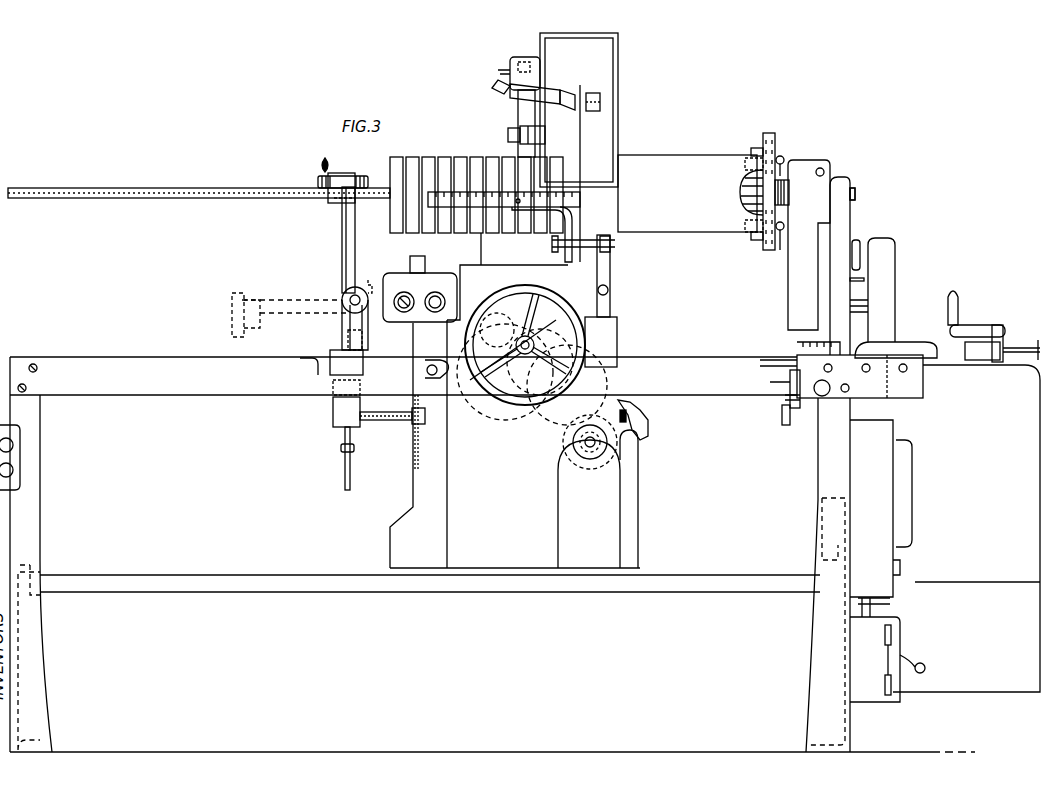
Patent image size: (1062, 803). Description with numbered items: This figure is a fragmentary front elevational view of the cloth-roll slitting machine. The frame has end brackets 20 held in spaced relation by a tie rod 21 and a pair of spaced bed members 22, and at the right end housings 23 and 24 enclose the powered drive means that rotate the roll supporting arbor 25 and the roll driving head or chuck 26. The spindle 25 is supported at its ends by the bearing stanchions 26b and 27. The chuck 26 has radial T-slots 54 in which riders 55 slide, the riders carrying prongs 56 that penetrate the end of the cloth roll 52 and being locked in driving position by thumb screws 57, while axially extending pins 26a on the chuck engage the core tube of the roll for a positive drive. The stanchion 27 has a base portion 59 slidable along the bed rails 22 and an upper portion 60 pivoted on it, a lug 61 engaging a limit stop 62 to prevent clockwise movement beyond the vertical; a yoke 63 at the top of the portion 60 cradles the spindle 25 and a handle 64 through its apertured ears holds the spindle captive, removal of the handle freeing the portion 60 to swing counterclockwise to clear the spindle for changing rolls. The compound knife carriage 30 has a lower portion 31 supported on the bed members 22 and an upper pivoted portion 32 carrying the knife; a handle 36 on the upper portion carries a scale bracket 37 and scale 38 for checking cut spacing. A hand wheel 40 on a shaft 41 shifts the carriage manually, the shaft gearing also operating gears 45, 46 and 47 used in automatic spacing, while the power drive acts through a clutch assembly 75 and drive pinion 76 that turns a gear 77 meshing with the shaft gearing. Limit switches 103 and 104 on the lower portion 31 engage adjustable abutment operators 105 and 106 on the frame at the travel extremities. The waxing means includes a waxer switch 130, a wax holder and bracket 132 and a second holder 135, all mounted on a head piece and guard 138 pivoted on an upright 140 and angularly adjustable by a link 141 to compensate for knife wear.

The end brackets 20 is at (38, 670).
The tie rod 21 is at (236, 584).
The slide or bed members 22 is at (188, 382).
The housing 23 is at (1013, 372).
The housing 24 is at (800, 167).
The roll supporting shaft or arbor 25 is at (208, 186).
The roll driving head or chuck 26 is at (769, 133).
The axially extending pins 26a is at (755, 190).
The bearing bracket or stanchion 26b is at (840, 177).
The bearing bracket or stanchion 27 is at (338, 243).
The compound knife carriage 30 is at (620, 324).
The lower carriage portion 31 is at (413, 462).
The upper carriage portion 32 is at (481, 248).
The handle 36 is at (608, 289).
The scale bracket 37 is at (572, 213).
The scale 38 is at (495, 208).
The hand wheel 40 is at (585, 350).
The shaft 41 is at (518, 347).
The gear 45 is at (520, 410).
The gear 46 is at (483, 415).
The gear 47 is at (468, 345).
The cloth roll 52 is at (660, 222).
The radial T-slots 54 is at (790, 195).
The riders 55 is at (877, 188).
The prongs or spikes 56 is at (748, 162).
The thumb screws 57 is at (782, 160).
The base portion 59 is at (346, 333).
The upper stanchion portion 60 is at (350, 266).
The lug 61 is at (386, 280).
The limit stop 62 is at (363, 345).
The yoke 63 is at (328, 203).
The handle 64 is at (318, 176).
The clutch assembly 75 is at (578, 462).
The drive pinion 76 is at (596, 468).
The gear 77 is at (560, 424).
The limit switch 103 is at (418, 426).
The limit switch 104 is at (632, 422).
The adjustable abutment operator 105 is at (382, 418).
The adjustable abutment operator 106 is at (782, 416).
The waxer switch 130 is at (508, 68).
The wax holder and bracket 132 is at (506, 100).
The holder 135 is at (598, 112).
The head piece and guard 138 is at (545, 52).
The upstanding bracket or upright 140 is at (520, 116).
The adjustable link 141 is at (508, 136).